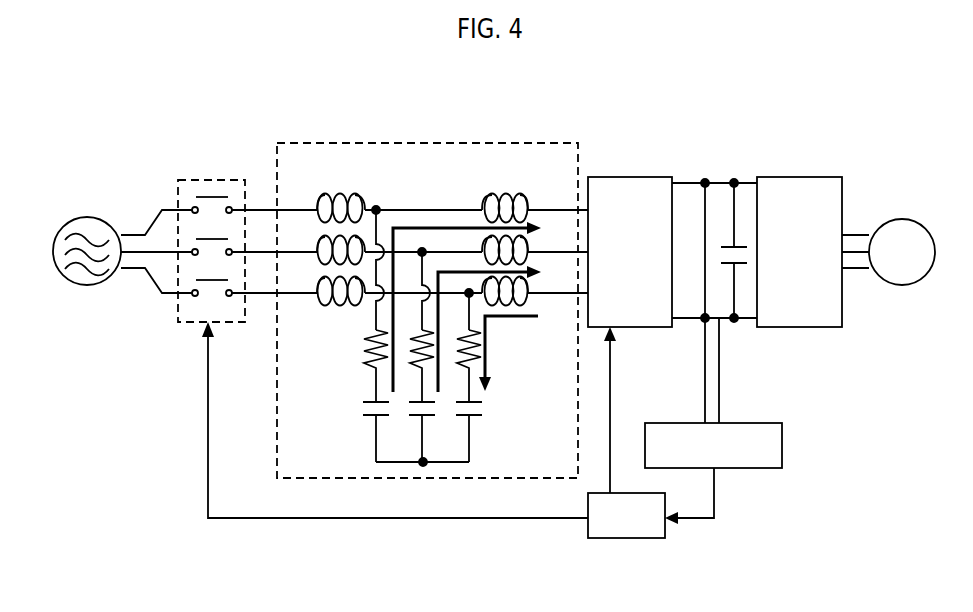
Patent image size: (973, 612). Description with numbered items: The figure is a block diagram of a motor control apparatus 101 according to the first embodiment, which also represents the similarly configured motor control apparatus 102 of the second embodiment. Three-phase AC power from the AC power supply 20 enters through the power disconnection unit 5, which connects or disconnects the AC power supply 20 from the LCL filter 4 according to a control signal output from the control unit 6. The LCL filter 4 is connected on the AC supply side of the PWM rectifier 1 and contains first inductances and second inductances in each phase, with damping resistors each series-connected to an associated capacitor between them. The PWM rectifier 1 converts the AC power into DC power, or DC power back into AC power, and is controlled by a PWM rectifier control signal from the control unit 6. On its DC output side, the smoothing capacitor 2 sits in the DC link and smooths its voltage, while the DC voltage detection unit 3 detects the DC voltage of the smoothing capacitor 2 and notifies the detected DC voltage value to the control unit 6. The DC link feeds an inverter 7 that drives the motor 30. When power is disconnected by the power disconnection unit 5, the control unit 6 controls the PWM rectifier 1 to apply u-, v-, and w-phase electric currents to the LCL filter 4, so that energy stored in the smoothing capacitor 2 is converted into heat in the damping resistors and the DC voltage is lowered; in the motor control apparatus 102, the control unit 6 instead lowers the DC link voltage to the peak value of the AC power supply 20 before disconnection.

The PWM rectifier 1 is at (633, 177).
The smoothing capacitor 2 is at (740, 243).
The DC voltage detection unit 3 is at (782, 448).
The LCL filter 4 is at (520, 143).
The power disconnection unit 5 is at (178, 312).
The control unit 6 is at (628, 538).
The inverter 7 is at (808, 177).
The AC power supply 20 is at (87, 286).
The motor 30 is at (900, 219).
The motor control apparatus 101 is at (502, 315).
The motor control apparatus 102 is at (503, 92).